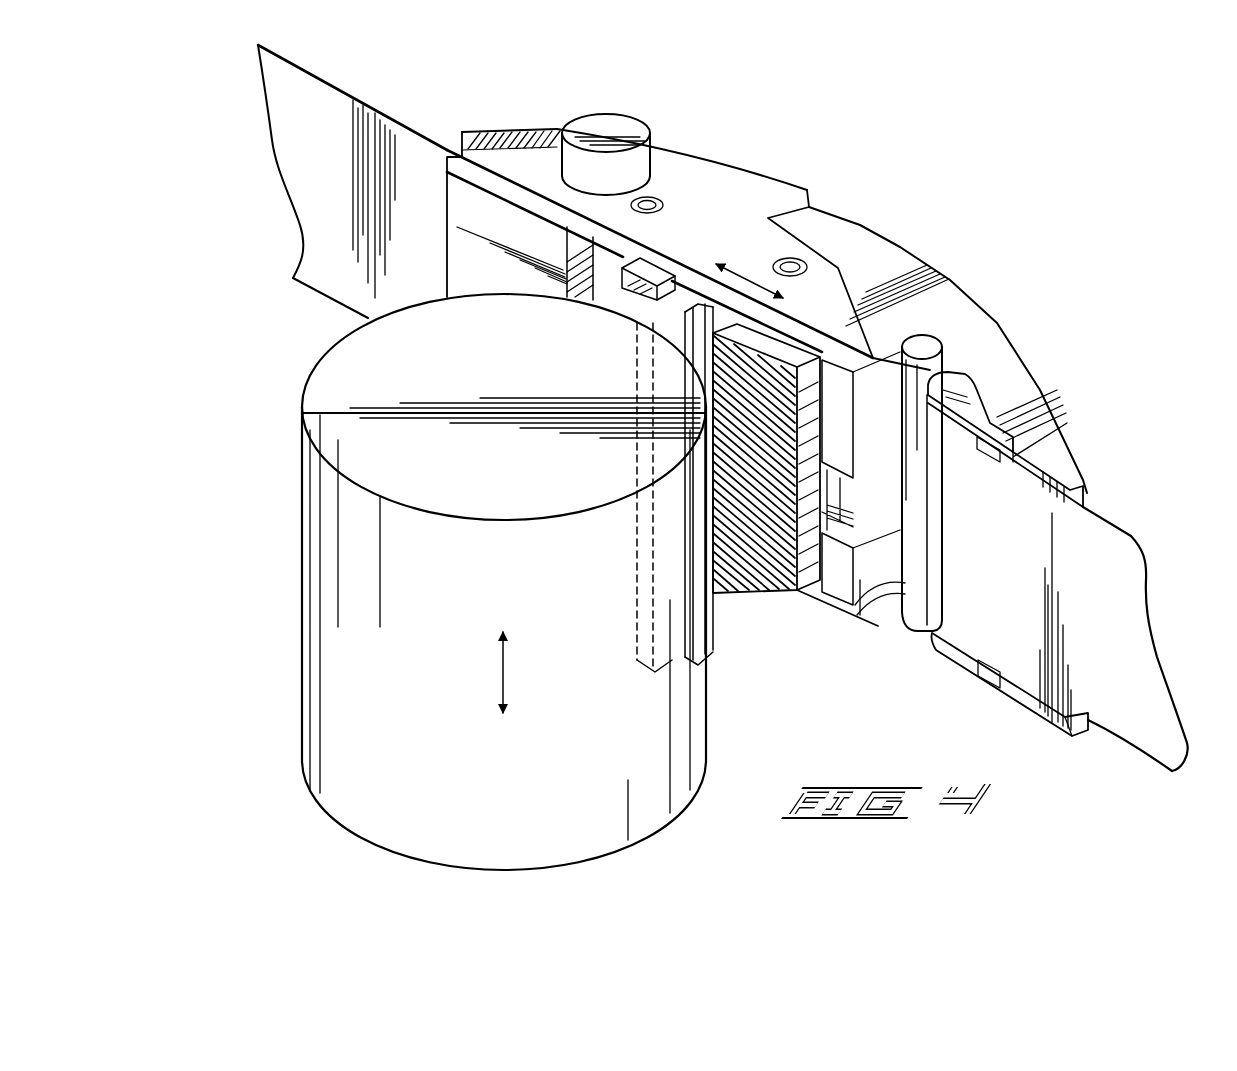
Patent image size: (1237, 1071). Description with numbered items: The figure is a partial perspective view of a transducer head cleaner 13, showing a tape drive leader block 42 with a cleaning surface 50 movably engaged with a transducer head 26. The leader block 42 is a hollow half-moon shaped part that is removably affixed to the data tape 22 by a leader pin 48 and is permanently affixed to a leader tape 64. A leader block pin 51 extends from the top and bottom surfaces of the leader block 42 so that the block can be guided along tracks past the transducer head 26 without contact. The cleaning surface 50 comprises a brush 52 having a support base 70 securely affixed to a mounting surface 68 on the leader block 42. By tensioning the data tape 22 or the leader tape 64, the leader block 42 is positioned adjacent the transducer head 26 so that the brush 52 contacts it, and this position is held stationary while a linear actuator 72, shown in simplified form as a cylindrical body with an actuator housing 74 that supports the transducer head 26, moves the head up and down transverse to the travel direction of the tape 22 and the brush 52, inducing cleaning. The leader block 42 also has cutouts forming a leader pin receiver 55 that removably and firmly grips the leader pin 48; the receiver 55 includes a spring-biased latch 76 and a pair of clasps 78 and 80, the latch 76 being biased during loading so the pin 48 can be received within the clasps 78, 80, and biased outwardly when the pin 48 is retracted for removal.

The transducer head cleaner 13 is at (826, 396).
The data tape 22 is at (312, 185).
The transducer head 26 is at (678, 300).
The tape drive leader block 42 is at (750, 168).
The leader pin 48 is at (920, 617).
The cleaning surface 50 is at (737, 642).
The leader block pin 51 is at (598, 133).
The brush 52 is at (765, 593).
The leader pin receiver 55 is at (880, 595).
The leader tape 64 is at (1117, 610).
The mounting surface 68 is at (612, 268).
The support base 70 is at (790, 362).
The linear actuator 72 is at (464, 582).
The actuator housing 74 is at (398, 349).
The spring-biased latch 76 is at (887, 493).
The clasp 78 is at (940, 374).
The clasp 80 is at (938, 625).